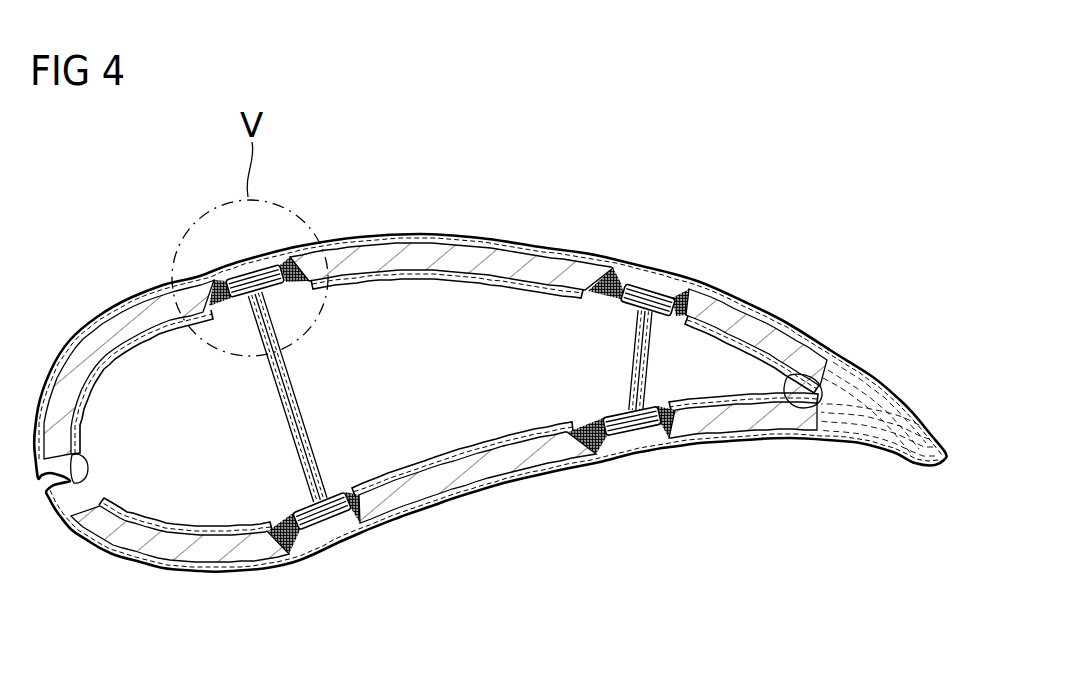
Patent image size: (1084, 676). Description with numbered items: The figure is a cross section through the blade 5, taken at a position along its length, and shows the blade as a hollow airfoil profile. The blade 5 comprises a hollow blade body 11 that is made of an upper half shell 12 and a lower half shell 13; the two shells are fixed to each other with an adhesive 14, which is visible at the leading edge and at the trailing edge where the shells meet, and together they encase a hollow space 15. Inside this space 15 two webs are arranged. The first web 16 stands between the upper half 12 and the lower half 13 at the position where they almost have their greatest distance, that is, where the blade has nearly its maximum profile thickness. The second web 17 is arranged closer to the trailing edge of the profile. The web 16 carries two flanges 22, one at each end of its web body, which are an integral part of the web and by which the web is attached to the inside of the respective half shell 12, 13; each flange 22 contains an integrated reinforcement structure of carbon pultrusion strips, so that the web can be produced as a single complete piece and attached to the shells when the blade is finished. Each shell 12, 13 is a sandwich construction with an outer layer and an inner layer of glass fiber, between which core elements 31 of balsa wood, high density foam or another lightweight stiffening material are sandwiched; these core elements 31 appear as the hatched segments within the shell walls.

The blade 5 is at (645, 160).
The hollow blade body 11 is at (700, 273).
The upper half shell 12 is at (882, 210).
The lower half shell 13 is at (710, 467).
The adhesive 14 is at (808, 385).
The hollow space 15 is at (213, 510).
The first web 16 is at (308, 390).
The second web 17 is at (617, 356).
The flange 22 is at (240, 297).
The core element 31 is at (490, 250).